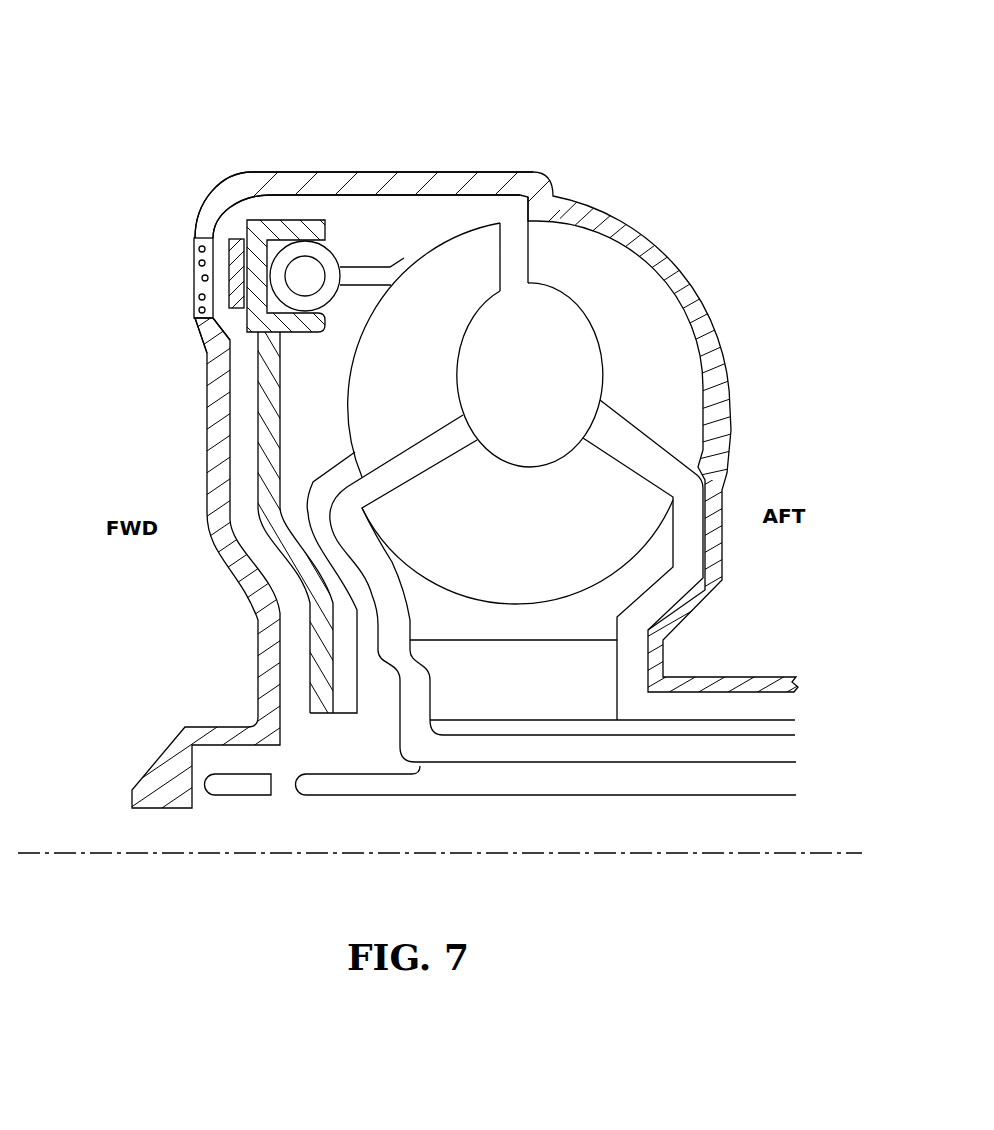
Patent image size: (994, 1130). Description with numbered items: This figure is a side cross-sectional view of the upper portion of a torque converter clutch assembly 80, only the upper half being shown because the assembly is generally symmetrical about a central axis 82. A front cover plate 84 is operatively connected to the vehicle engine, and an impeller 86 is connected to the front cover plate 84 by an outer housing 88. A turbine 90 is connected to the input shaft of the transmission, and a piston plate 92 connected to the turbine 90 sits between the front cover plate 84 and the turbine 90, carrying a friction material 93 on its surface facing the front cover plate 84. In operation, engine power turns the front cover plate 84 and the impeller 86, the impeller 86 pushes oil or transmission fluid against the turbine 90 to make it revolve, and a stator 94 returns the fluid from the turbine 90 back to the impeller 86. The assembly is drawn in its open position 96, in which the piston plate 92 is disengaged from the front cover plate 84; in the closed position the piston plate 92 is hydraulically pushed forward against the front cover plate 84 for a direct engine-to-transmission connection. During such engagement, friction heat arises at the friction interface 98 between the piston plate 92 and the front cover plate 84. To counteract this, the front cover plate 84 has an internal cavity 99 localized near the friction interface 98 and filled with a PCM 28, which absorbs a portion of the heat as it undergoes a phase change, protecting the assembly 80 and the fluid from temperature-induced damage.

The PCM 28 is at (202, 310).
The torque converter clutch assembly 80 is at (658, 103).
The central axis 82 is at (815, 852).
The front cover plate 84 is at (218, 443).
The impeller 86 is at (643, 363).
The outer housing 88 is at (417, 182).
The turbine 90 is at (470, 257).
The piston plate 92 is at (260, 240).
The friction material 93 is at (222, 247).
The stator 94 is at (557, 345).
The open position 96 is at (178, 143).
The friction interface 98 is at (197, 237).
The internal cavity 99 is at (203, 283).